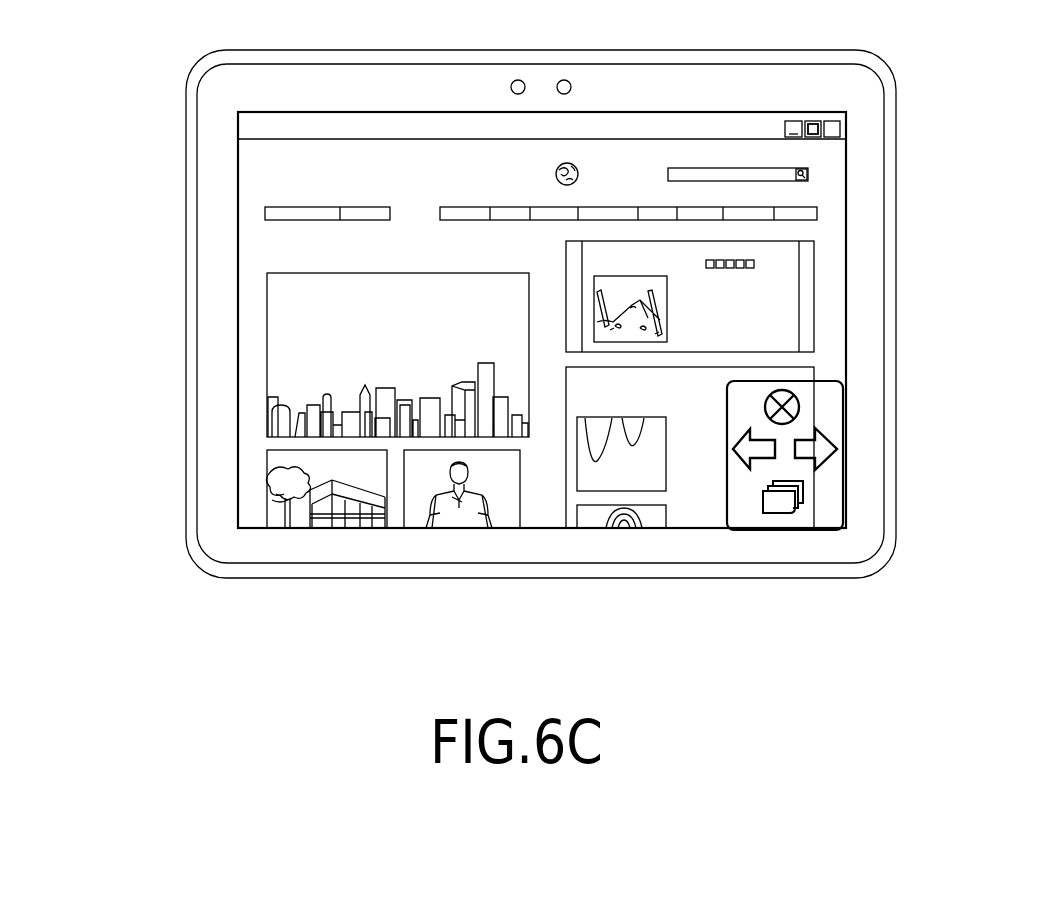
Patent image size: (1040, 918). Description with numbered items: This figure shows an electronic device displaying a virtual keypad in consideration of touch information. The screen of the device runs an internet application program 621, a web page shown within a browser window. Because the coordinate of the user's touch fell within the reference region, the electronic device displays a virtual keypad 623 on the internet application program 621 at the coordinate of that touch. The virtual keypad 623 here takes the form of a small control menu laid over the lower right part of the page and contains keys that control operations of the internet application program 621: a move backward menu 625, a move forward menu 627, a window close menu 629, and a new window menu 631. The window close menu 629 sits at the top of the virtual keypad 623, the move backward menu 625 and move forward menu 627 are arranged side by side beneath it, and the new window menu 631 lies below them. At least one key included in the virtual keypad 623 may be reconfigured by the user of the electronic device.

The internet application program 621 is at (813, 200).
The virtual keypad 623 is at (851, 495).
The move backward menu 625 is at (747, 448).
The move forward menu 627 is at (838, 452).
The window close menu 629 is at (798, 411).
The new window menu 631 is at (780, 502).